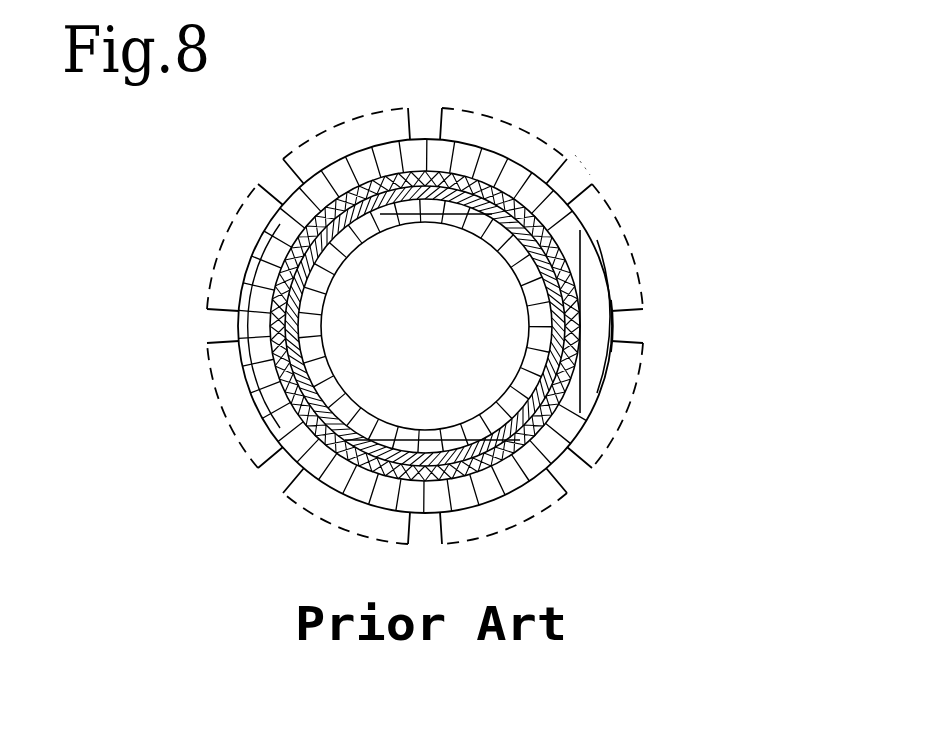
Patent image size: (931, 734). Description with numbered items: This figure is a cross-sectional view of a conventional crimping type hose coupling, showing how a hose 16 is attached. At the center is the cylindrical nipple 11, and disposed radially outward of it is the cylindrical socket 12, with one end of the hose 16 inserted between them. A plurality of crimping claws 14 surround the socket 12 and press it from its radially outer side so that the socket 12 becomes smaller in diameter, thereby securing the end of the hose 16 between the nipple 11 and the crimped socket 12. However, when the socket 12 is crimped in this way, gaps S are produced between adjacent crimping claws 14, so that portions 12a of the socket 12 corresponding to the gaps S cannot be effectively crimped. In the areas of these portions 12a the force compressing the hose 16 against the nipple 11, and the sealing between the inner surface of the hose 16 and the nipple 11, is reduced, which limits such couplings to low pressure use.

The nipple 11 is at (510, 250).
The socket 12 is at (598, 232).
The portions of the socket 12a is at (605, 330).
The crimping claws 14 is at (478, 116).
The hose 16 is at (578, 413).
The gaps S is at (580, 163).